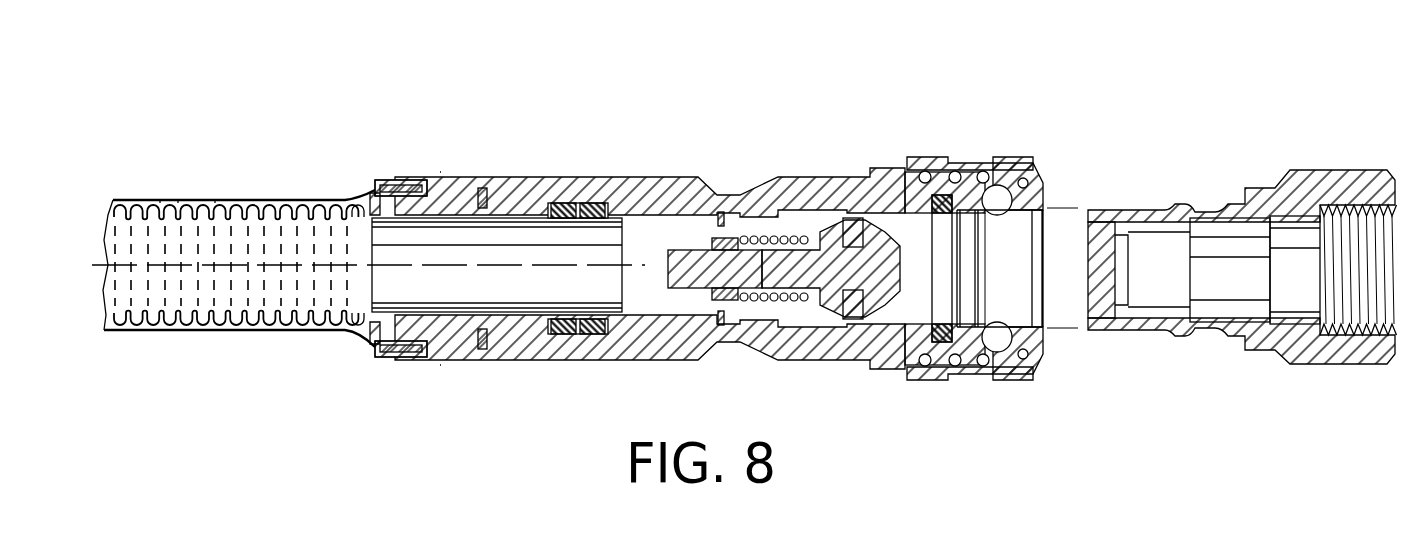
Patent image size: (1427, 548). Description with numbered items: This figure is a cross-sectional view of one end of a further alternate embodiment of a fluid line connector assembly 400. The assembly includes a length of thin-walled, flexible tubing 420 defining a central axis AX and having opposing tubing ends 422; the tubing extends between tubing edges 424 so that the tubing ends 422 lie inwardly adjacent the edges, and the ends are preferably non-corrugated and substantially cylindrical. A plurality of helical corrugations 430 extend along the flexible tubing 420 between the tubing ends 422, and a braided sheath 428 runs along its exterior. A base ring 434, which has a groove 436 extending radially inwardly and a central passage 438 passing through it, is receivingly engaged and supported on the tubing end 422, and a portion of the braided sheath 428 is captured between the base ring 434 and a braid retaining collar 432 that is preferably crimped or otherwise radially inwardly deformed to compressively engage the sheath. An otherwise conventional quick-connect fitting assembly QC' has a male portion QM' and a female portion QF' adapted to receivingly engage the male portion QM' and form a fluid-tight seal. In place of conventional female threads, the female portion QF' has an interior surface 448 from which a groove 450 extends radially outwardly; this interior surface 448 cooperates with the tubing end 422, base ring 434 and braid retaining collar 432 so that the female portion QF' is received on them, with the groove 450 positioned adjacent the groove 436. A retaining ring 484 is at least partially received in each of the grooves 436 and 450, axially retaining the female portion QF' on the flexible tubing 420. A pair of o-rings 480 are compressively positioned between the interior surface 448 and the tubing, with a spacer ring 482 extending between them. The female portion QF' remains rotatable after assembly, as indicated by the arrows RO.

The fluid line connector assembly 400 is at (574, 120).
The flexible tubing 420 is at (250, 338).
The tubing end 422 is at (360, 338).
The tubing edge 424 is at (625, 285).
The braided sheath 428 is at (220, 201).
The helical corrugations 430 is at (178, 201).
The braid retaining collar 432 is at (395, 184).
The base ring 434 is at (500, 203).
The groove 436 is at (530, 342).
The central passage 438 is at (556, 205).
The interior surface 448 is at (584, 205).
The groove 450 is at (482, 350).
The o-rings 480 is at (586, 333).
The spacer ring 482 is at (572, 220).
The retaining ring 484 is at (482, 187).
The central axis AX is at (512, 266).
The arrows RO is at (447, 140).
The female portion QF' is at (992, 229).
The quick-connect fitting assembly QC' is at (1051, 187).
The male portion QM' is at (1242, 228).